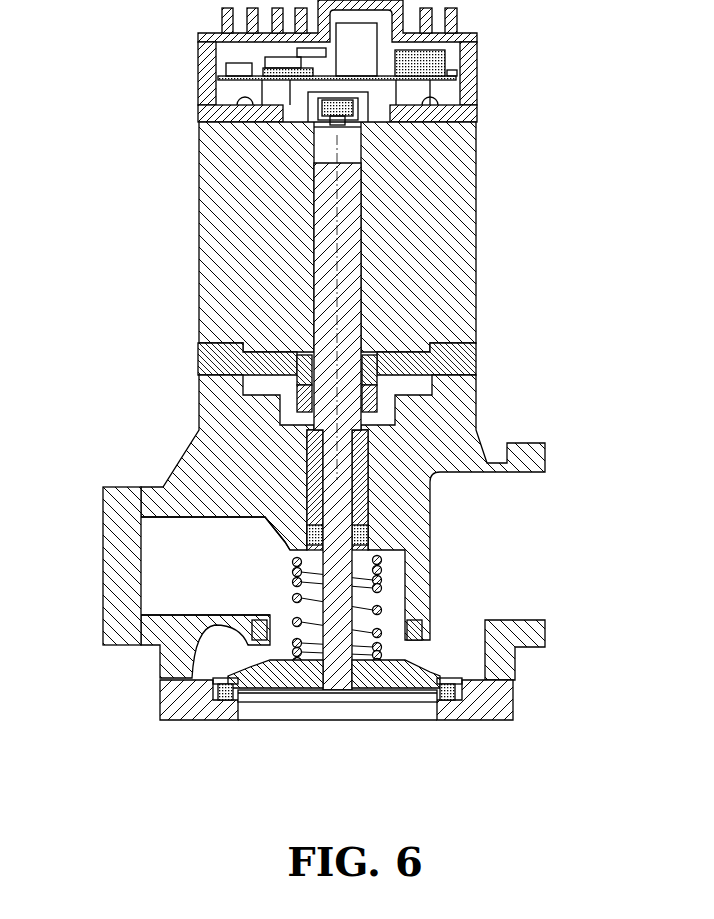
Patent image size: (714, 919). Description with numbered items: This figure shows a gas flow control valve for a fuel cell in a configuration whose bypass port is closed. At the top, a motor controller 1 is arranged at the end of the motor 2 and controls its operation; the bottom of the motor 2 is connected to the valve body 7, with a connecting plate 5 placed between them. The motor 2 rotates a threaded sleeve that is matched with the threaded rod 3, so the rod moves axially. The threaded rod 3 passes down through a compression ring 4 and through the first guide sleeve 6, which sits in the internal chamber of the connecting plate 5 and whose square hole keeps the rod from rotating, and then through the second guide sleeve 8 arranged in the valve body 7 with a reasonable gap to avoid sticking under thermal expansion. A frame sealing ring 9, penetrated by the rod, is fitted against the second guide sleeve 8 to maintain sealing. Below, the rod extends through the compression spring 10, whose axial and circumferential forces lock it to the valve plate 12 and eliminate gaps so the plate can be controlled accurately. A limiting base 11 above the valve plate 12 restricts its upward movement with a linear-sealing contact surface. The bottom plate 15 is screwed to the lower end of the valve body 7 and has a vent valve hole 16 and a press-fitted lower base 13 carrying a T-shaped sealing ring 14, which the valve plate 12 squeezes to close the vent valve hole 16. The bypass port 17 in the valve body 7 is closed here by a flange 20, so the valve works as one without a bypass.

The motor controller 1 is at (470, 67).
The motor 2 is at (427, 208).
The threaded rod 3 is at (351, 300).
The compression ring 4 is at (372, 360).
The connecting plate 5 is at (467, 357).
The first guide sleeve 6 is at (372, 395).
The valve body 7 is at (448, 425).
The second guide sleeve 8 is at (360, 472).
The frame sealing ring 9 is at (361, 530).
The compression spring 10 is at (378, 590).
The limiting base 11 is at (412, 632).
The valve plate 12 is at (388, 672).
The lower base 13 is at (455, 679).
The sealing ring 14 is at (447, 694).
The bottom plate 15 is at (503, 710).
The vent valve hole 16 is at (303, 712).
The bypass port 17 is at (187, 580).
The flange 20 is at (117, 543).